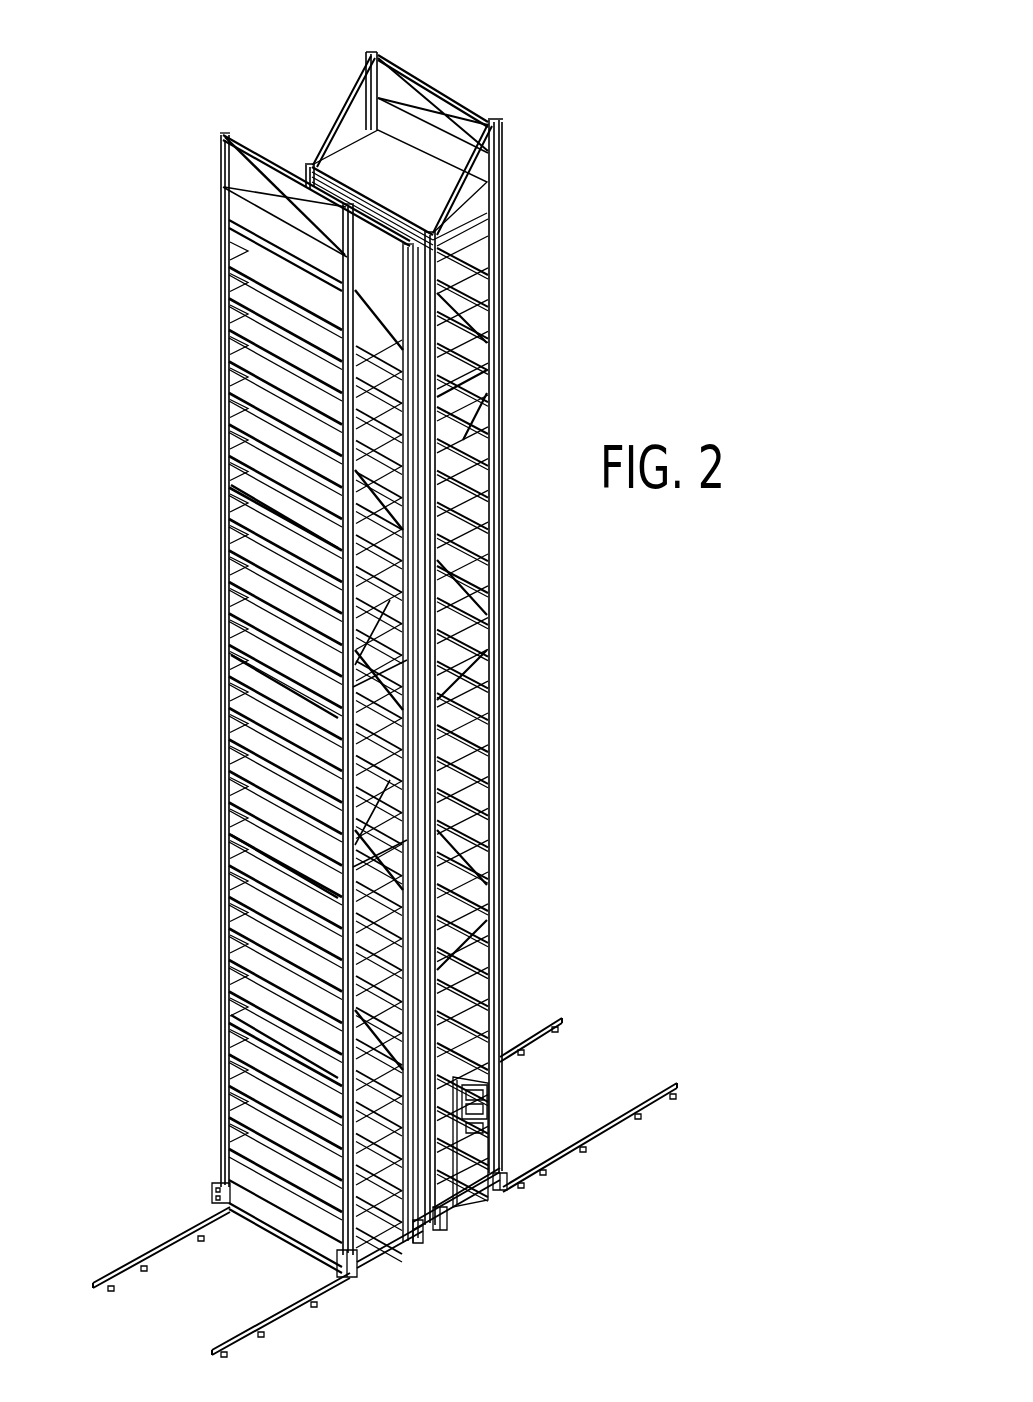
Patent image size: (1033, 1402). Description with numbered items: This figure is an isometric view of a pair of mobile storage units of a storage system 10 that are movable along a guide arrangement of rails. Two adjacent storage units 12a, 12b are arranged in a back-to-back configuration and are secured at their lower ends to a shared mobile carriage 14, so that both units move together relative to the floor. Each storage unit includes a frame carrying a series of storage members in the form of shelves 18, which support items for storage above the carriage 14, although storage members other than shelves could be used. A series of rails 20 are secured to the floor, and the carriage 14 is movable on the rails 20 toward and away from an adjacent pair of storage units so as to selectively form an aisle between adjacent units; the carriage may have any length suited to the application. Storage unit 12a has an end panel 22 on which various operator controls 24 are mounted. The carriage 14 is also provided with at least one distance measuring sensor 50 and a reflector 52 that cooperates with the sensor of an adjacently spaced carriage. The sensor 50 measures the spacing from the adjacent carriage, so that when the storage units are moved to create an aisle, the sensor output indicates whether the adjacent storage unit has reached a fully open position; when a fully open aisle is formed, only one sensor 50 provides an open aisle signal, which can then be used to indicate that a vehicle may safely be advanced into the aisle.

The storage system 10 is at (660, 87).
The storage unit 12a is at (508, 181).
The storage unit 12b is at (204, 219).
The mobile carriage 14 is at (434, 1236).
The shelves 18 is at (498, 695).
The rails 20 is at (128, 1272).
The end panel 22 is at (491, 1184).
The operator controls 24 is at (503, 1097).
The distance measuring sensor 50 is at (240, 1210).
The reflector 52 is at (318, 1258).